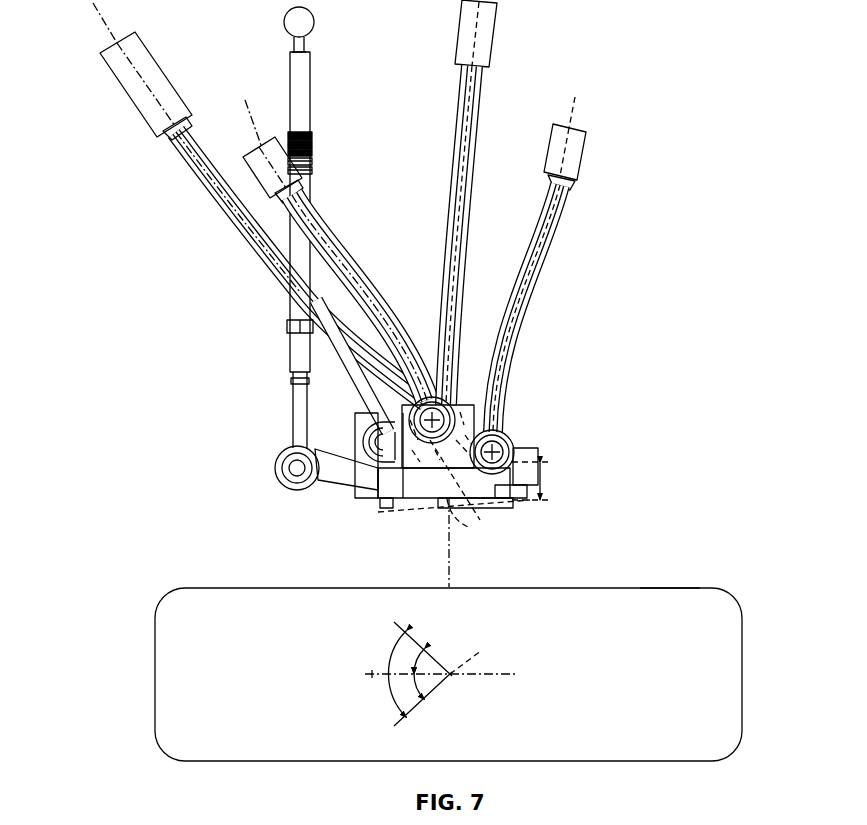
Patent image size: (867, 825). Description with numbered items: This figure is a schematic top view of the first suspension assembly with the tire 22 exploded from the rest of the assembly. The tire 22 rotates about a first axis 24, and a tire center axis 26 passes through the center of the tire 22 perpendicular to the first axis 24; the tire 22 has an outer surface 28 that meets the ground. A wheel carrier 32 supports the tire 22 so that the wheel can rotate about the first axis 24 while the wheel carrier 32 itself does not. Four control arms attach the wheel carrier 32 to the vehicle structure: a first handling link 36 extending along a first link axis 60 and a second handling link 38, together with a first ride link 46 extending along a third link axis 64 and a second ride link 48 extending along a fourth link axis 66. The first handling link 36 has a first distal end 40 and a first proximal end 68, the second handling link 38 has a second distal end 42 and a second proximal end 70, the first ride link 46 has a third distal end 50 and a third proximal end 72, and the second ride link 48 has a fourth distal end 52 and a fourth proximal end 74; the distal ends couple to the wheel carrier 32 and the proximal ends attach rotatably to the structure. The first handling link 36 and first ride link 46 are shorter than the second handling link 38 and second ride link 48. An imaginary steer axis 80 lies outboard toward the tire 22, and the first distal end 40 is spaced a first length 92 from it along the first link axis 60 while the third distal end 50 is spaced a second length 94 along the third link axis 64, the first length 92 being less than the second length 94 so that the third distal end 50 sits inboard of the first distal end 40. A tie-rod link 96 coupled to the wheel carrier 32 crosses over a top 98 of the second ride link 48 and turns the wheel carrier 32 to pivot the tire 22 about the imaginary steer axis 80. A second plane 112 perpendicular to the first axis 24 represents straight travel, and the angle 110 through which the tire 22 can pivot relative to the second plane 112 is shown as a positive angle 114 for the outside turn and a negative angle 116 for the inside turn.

The tire 22 is at (745, 675).
The first axis 24 is at (460, 556).
The tire center axis 26 is at (479, 657).
The outer surface 28 is at (680, 598).
The wheel carrier 32 is at (540, 462).
The first handling link 36 is at (556, 232).
The second handling link 38 is at (484, 90).
The first distal end 40 is at (512, 440).
The second distal end 42 is at (470, 402).
The first ride link 46 is at (352, 256).
The second ride link 48 is at (213, 177).
The third distal end 50 is at (368, 389).
The fourth distal end 52 is at (362, 456).
The first link axis 60 is at (578, 115).
The third link axis 64 is at (258, 125).
The fourth link axis 66 is at (100, 25).
The first proximal end 68 is at (580, 160).
The second proximal end 70 is at (492, 35).
The third proximal end 72 is at (262, 155).
The fourth proximal end 74 is at (118, 84).
The imaginary steer axis 80 is at (383, 515).
The first length 92 is at (548, 500).
The second length 94 is at (467, 528).
The tie-rod link 96 is at (305, 95).
The top 98 is at (263, 227).
The angle 110 is at (392, 665).
The second plane 112 is at (372, 678).
The positive angle 114 is at (420, 660).
The negative angle 116 is at (425, 688).